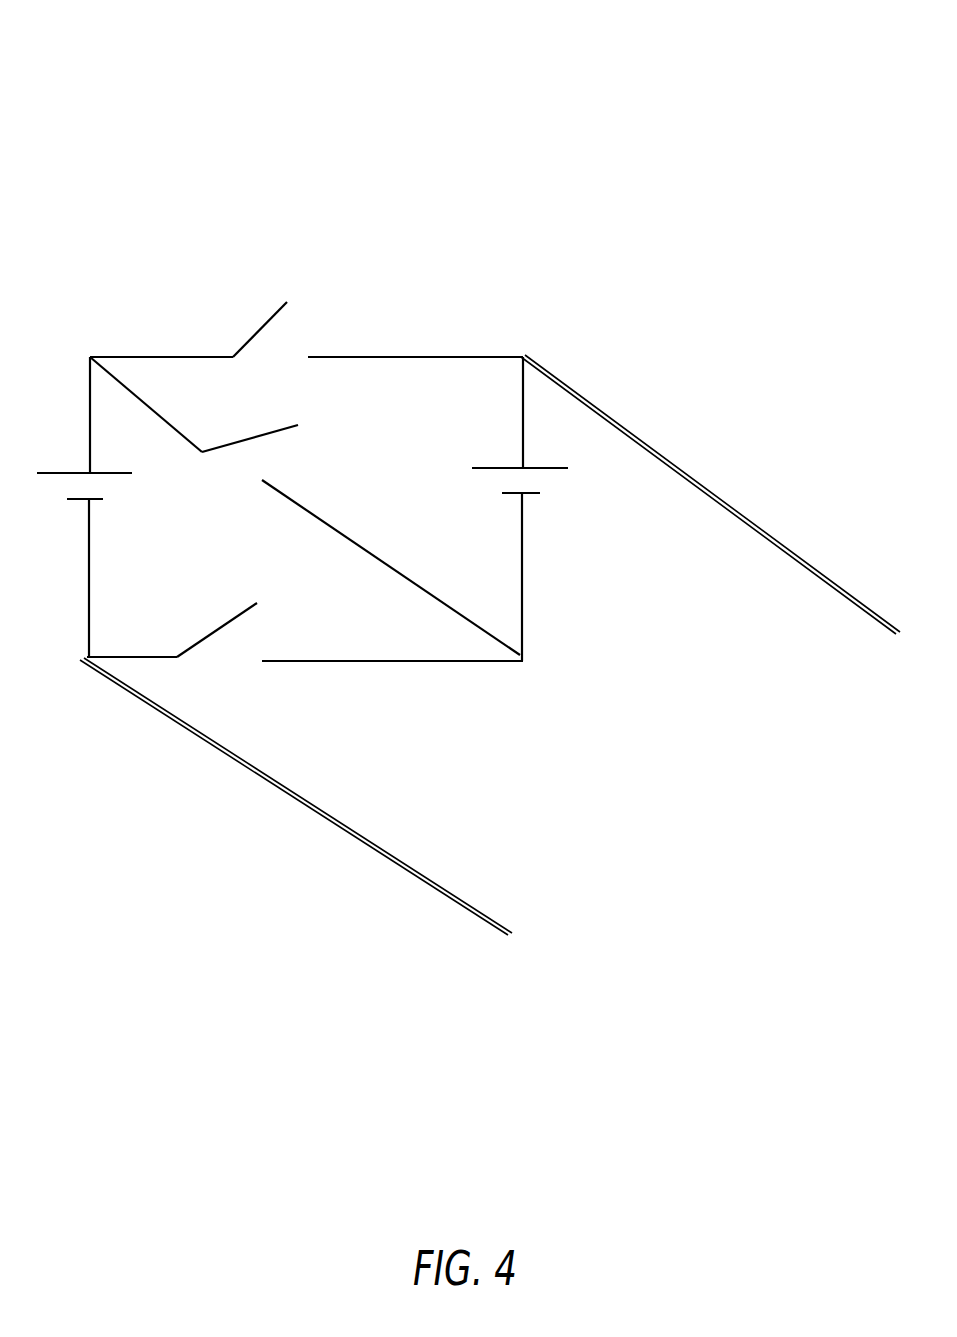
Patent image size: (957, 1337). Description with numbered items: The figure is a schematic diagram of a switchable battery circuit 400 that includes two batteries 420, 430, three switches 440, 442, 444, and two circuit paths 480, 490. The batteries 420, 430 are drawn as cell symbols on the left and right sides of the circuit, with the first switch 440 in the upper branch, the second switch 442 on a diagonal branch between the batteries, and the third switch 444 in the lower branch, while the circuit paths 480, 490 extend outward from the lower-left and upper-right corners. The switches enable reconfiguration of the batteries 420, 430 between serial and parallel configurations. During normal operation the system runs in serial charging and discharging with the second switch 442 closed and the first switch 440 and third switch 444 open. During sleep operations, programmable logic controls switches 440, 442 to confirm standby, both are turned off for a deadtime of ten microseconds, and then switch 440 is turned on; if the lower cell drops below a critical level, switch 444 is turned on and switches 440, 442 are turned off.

The switchable battery circuit 400 is at (88, 66).
The battery 420 is at (108, 483).
The battery 430 is at (530, 483).
The first switch 440 is at (263, 327).
The second switch 442 is at (253, 440).
The third switch 444 is at (235, 620).
The circuit path 480 is at (480, 912).
The circuit path 490 is at (822, 578).